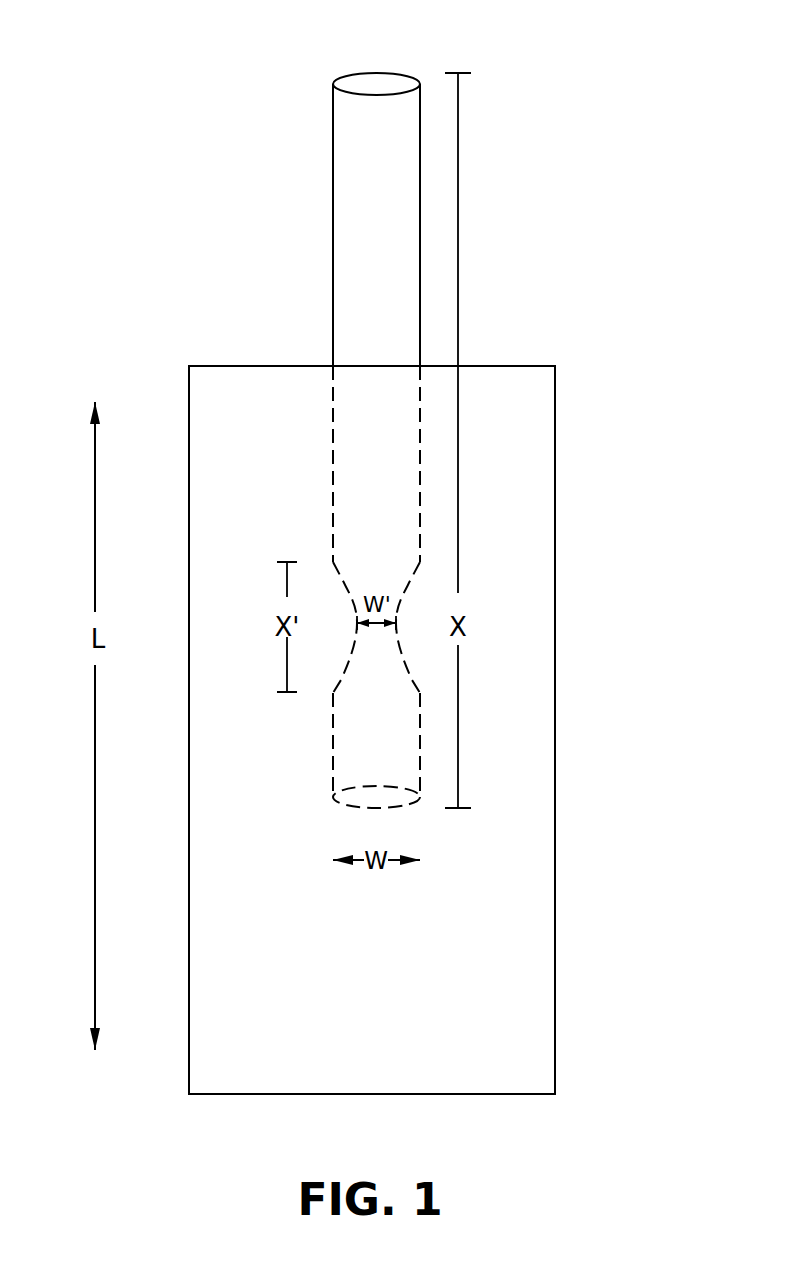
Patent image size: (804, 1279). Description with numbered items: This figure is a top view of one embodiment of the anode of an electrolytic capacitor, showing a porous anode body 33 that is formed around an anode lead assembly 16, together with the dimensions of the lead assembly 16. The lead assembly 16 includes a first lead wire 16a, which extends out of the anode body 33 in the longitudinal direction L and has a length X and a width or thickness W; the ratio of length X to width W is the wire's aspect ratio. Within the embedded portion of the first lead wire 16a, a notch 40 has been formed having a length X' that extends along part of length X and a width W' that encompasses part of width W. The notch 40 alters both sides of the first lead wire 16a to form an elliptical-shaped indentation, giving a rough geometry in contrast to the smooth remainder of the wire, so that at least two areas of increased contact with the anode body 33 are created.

The anode lead assembly 16 is at (288, 115).
The first lead wire 16a is at (374, 103).
The porous anode body 33 is at (520, 921).
The notch 40 is at (345, 600).